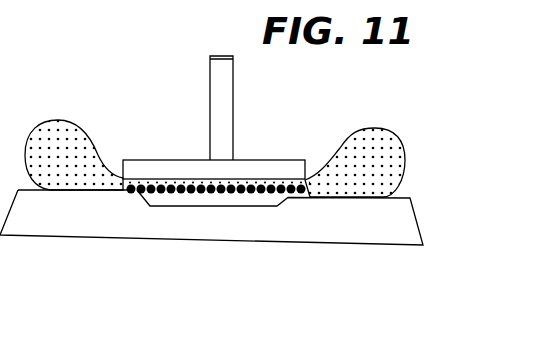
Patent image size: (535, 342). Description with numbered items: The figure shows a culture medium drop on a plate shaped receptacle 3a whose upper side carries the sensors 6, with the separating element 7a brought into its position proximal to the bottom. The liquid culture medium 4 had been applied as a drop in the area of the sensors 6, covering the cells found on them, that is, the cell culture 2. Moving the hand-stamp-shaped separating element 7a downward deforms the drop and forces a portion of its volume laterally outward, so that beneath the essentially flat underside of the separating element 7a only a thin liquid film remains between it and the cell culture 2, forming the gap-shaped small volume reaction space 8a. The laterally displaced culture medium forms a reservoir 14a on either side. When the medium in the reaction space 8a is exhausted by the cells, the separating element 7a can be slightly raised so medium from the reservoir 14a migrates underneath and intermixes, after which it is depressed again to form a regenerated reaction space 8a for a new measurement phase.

The cell culture 2 is at (312, 184).
The plate shaped receptacle 3a is at (27, 204).
The liquid culture medium 4 is at (82, 141).
The sensors 6 is at (218, 192).
The separating element 7a is at (245, 155).
The small volume reaction space 8a is at (128, 190).
The reservoir 14a is at (58, 136).